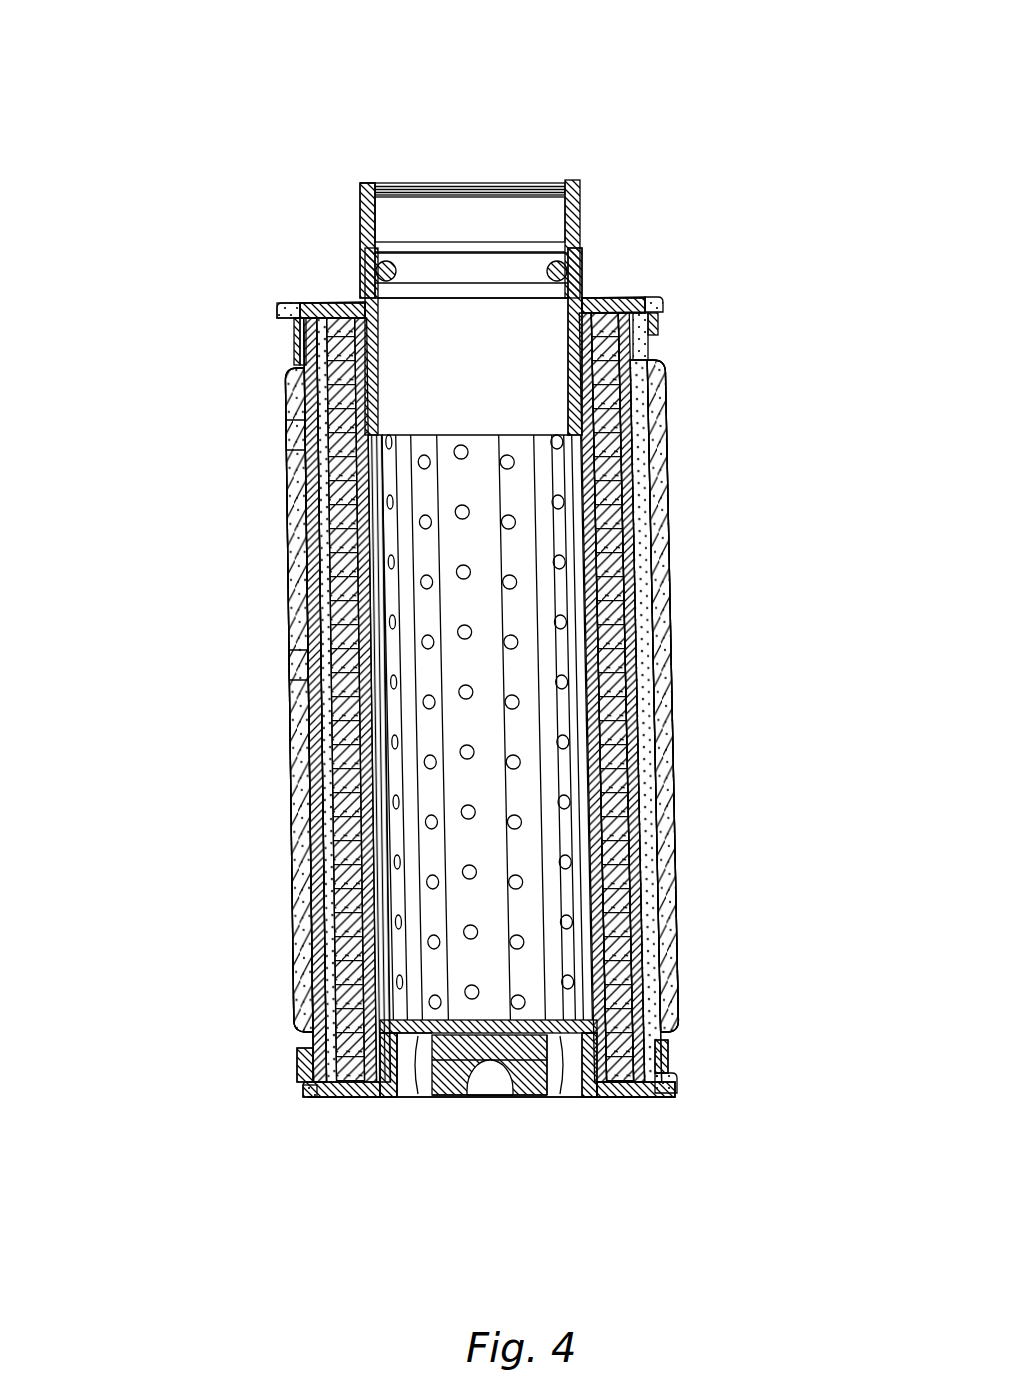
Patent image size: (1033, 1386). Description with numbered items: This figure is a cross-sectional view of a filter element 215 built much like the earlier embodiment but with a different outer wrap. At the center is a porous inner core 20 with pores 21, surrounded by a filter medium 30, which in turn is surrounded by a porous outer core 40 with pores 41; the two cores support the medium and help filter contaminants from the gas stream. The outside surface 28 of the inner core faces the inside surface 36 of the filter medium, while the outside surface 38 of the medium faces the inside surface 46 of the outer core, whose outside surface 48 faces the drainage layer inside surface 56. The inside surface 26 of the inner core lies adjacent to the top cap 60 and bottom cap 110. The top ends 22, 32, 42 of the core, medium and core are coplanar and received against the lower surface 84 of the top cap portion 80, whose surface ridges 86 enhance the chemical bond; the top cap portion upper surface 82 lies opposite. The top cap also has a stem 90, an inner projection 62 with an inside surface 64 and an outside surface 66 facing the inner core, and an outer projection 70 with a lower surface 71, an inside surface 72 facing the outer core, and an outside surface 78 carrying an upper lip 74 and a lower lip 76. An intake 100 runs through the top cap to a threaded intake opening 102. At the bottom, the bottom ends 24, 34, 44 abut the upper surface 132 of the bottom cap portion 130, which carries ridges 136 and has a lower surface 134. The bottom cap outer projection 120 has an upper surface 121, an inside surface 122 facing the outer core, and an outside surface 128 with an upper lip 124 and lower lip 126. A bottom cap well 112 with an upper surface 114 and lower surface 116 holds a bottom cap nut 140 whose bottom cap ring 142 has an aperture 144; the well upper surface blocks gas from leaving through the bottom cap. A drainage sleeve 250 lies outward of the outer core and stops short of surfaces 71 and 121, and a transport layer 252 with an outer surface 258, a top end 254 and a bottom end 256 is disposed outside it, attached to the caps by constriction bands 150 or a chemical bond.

The inner core 20 is at (550, 705).
The pores 21 is at (660, 633).
The top end 22 is at (592, 297).
The bottom end 24 is at (608, 1097).
The inside surface 26 is at (652, 480).
The outside surface 28 is at (607, 847).
The filter medium 30 is at (623, 457).
The top end 32 is at (630, 297).
The bottom end 34 is at (637, 1093).
The inside surface 36 is at (623, 590).
The outside surface 38 is at (620, 730).
The outer core 40 is at (327, 603).
The pores 41 is at (300, 433).
The top end 42 is at (653, 310).
The bottom end 44 is at (652, 1093).
The inside surface 46 is at (313, 705).
The outside surface 48 is at (343, 932).
The drainage layer inside surface 56 is at (307, 543).
The top cap 60 is at (582, 203).
The inner projection 62 is at (652, 342).
The inside surface 64 is at (340, 303).
The outside surface 66 is at (363, 408).
The outer projection 70 is at (652, 325).
The lower surface 71 is at (570, 405).
The inside surface 72 is at (668, 362).
The upper lip 74 is at (277, 307).
The lower lip 76 is at (280, 370).
The outside surface 78 is at (293, 332).
The top cap portion 80 is at (312, 307).
The upper surface 82 is at (587, 298).
The lower surface 84 is at (297, 308).
The surface ridges 86 is at (380, 337).
The stem 90 is at (360, 202).
The intake 100 is at (503, 212).
The threaded intake opening 102 is at (395, 187).
The bottom cap 110 is at (340, 1100).
The bottom cap well 112 is at (407, 1083).
The upper surface 114 is at (413, 1083).
The lower surface 116 is at (563, 1097).
The outer projection 120 is at (307, 1087).
The upper surface 121 is at (668, 988).
The inside surface 122 is at (325, 1040).
The upper lip 124 is at (663, 1010).
The lower lip 126 is at (673, 1092).
The outside surface 128 is at (663, 1050).
The bottom cap portion 130 is at (357, 1100).
The upper surface 132 is at (363, 1100).
The lower surface 134 is at (603, 1097).
The ridges 136 is at (318, 1080).
The bottom cap nut 140 is at (528, 1097).
The bottom cap ring 142 is at (465, 1097).
The aperture 144 is at (502, 1097).
The constriction bands 150 is at (290, 343).
The filter element 215 is at (693, 128).
The drainage sleeve 250 is at (297, 890).
The transport layer 252 is at (300, 753).
The top end 254 is at (277, 308).
The bottom end 256 is at (317, 1093).
The outer surface 258 is at (297, 488).